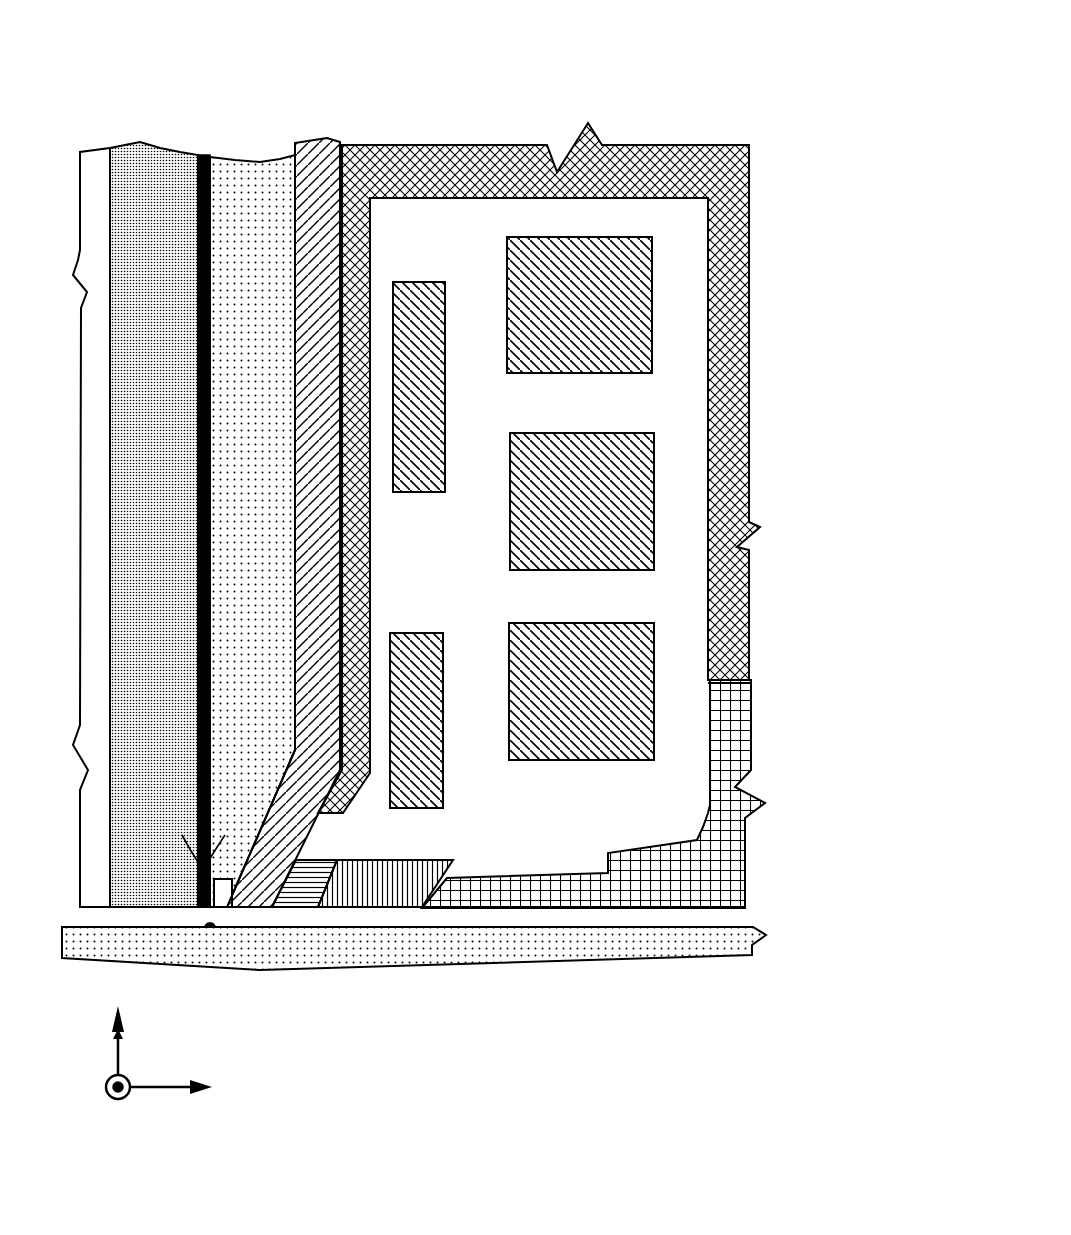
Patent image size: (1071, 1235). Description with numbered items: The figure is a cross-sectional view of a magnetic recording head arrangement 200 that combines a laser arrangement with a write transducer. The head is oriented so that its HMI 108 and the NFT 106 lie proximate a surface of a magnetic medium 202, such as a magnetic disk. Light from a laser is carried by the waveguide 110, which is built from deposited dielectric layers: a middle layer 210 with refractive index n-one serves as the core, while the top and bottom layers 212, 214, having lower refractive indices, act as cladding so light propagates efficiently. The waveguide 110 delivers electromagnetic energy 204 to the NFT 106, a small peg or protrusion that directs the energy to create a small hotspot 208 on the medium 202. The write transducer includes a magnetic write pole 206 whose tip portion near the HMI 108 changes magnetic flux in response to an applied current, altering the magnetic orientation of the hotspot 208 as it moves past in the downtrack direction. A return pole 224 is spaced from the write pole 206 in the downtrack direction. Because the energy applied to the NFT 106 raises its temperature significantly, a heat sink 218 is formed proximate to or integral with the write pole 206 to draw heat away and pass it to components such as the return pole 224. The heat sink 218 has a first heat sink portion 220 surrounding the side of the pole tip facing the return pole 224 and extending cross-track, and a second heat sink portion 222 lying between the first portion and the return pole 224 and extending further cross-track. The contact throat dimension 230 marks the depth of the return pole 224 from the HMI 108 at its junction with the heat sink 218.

The magnetic recording head arrangement 200 is at (676, 44).
The waveguide 110 is at (292, 103).
The top layer 212 is at (150, 145).
The middle layer 210 is at (212, 155).
The bottom layer 214 is at (277, 163).
The magnetic write pole 206 is at (313, 142).
The electromagnetic energy 204 is at (200, 858).
The HMI 108 is at (88, 907).
The hotspot 208 is at (206, 929).
The NFT 106 is at (224, 908).
The heat sink 218 is at (273, 1022).
The first heat sink portion 220 is at (300, 908).
The second heat sink portion 222 is at (365, 908).
The contact throat dimension 230 is at (458, 810).
The return pole 224 is at (750, 843).
The magnetic medium 202 is at (753, 947).